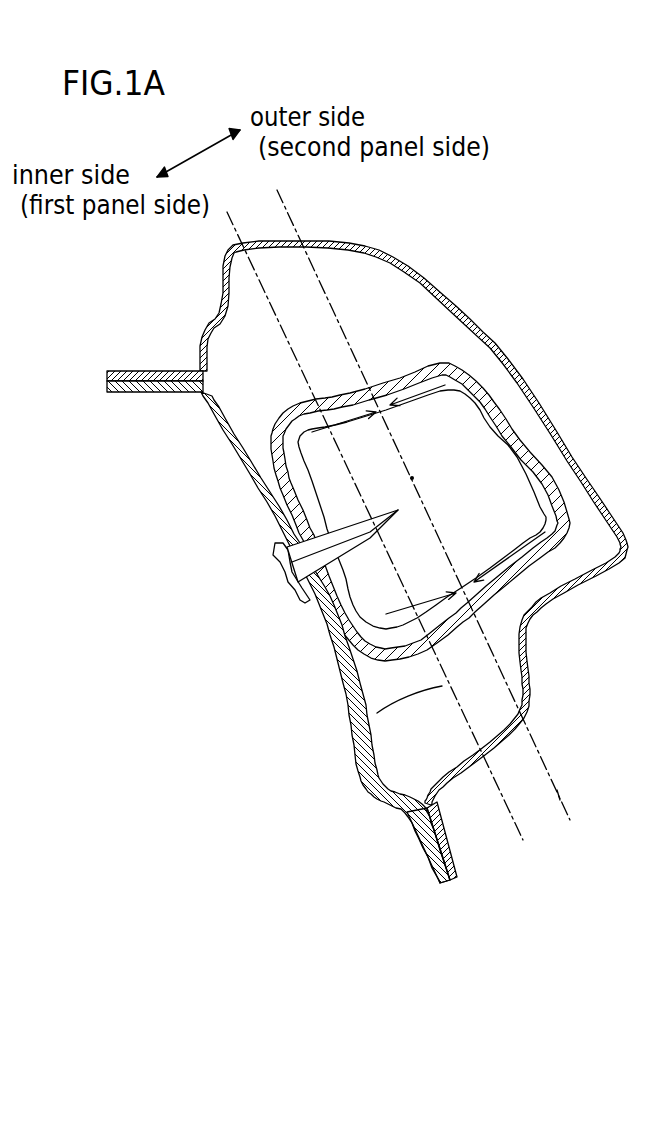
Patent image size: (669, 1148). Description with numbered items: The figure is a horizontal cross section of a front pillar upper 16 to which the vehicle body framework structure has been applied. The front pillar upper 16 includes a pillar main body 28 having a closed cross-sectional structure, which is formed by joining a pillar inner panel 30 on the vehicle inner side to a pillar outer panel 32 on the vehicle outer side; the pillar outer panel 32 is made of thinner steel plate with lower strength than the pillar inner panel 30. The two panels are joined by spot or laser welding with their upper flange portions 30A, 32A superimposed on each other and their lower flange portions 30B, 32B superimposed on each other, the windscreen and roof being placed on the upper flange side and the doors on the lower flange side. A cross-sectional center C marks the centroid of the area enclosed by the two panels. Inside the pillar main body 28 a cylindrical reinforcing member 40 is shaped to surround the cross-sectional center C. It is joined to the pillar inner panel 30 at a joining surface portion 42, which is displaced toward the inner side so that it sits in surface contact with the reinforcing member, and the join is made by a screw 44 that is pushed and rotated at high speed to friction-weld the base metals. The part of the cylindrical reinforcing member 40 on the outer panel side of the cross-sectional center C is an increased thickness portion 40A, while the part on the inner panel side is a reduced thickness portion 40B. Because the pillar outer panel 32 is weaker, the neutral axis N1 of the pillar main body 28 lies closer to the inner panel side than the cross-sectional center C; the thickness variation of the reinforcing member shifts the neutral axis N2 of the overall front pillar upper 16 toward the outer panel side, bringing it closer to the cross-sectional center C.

The front pillar upper 16 is at (535, 198).
The pillar main body 28 is at (557, 308).
The pillar inner panel 30 is at (321, 659).
The upper flange portion 30A is at (130, 393).
The lower flange portion 30B is at (425, 862).
The pillar outer panel 32 is at (570, 445).
The upper flange portion 32A is at (128, 371).
The lower flange portion 32B is at (448, 850).
The cylindrical reinforcing member 40 is at (273, 415).
The increased thickness portion 40A is at (517, 478).
The reduced thickness portion 40B is at (312, 492).
The joining surface portion 42 is at (276, 523).
The screw 44 is at (296, 598).
The cross-sectional center C is at (424, 472).
The neutral axis of the pillar main body N1 is at (365, 718).
The neutral axis of the front pillar upper N2 is at (557, 790).